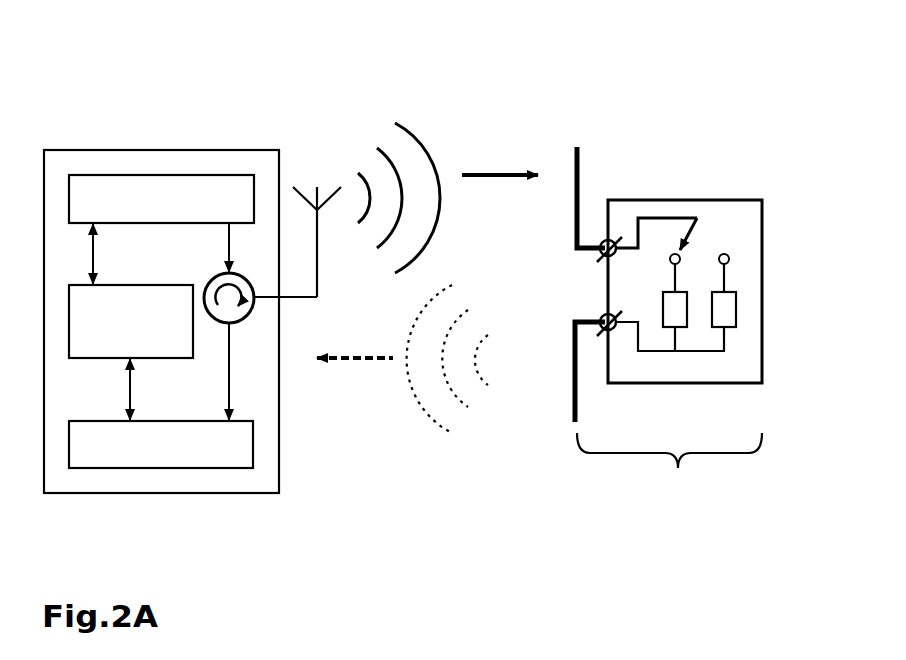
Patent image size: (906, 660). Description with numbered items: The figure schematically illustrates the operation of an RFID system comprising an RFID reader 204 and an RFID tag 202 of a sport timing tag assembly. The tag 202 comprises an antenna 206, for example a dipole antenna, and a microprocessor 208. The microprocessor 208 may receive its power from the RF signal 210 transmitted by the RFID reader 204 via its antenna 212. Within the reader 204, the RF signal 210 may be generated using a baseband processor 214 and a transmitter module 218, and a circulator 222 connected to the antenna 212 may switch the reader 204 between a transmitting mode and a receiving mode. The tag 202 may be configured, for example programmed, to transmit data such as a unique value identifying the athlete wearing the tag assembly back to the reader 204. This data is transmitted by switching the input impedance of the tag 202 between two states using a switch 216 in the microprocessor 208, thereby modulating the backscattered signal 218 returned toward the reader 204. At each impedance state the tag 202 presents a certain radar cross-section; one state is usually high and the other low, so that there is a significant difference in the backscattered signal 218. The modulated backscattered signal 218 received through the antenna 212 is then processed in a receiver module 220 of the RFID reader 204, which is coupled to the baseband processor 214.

The RFID tag 202 is at (669, 467).
The RFID reader 204 is at (223, 158).
The antenna 206 is at (562, 335).
The microprocessor 208 is at (737, 207).
The RF signal 210 is at (448, 198).
The antenna 212 is at (323, 177).
The baseband processor 214 is at (161, 199).
The switch 216 is at (690, 212).
The transmitter module / backscattered signal 218 is at (278, 359).
The receiver module 220 is at (161, 444).
The circulator 222 is at (216, 280).